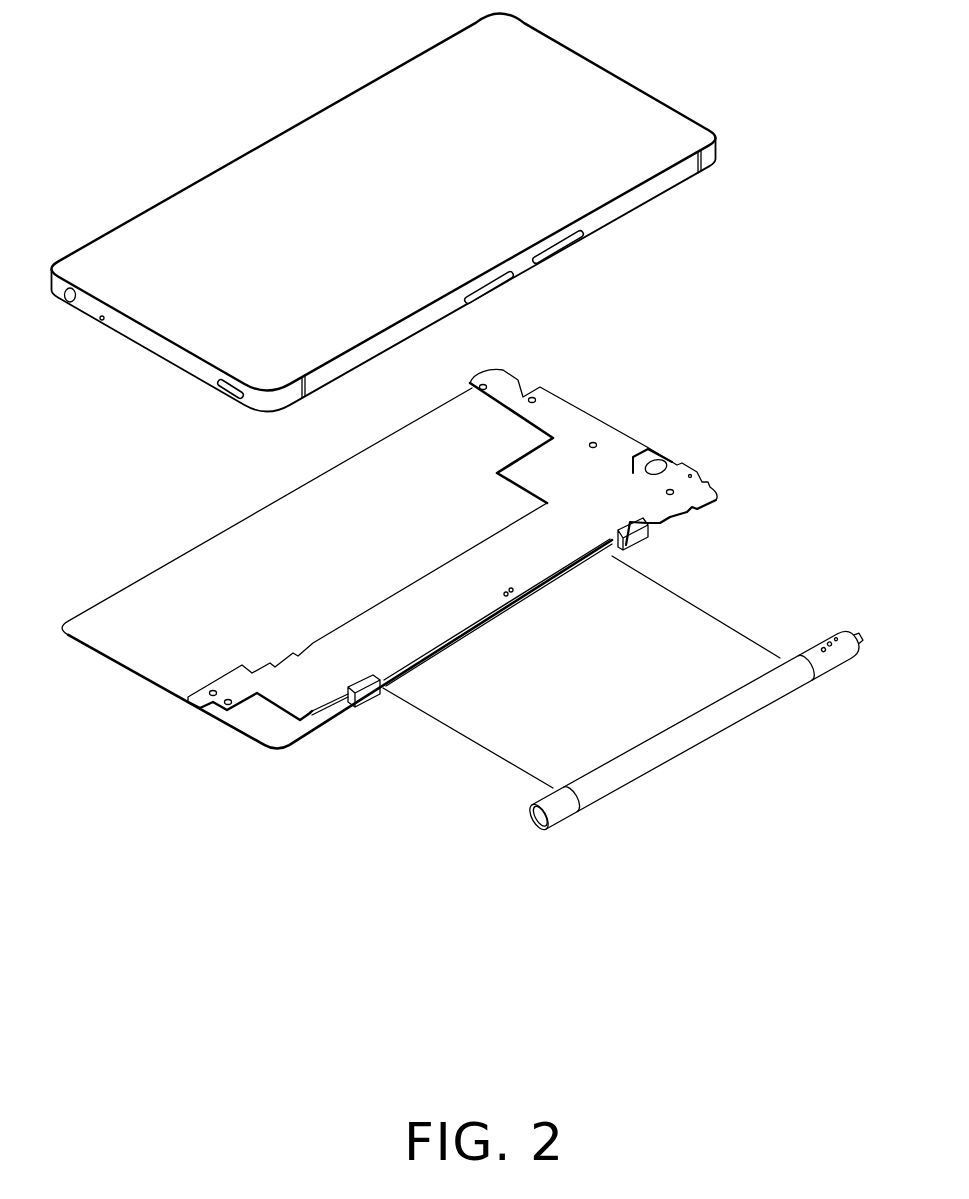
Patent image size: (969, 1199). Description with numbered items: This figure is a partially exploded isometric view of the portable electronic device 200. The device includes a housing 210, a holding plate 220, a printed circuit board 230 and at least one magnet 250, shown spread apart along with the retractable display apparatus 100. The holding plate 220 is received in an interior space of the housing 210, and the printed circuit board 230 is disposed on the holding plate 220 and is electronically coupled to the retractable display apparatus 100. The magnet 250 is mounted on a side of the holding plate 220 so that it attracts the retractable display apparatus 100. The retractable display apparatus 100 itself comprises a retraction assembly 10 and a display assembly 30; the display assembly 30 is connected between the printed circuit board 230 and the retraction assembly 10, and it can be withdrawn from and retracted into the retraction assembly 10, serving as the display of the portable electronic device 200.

The portable electronic device 200 is at (735, 213).
The housing 210 is at (600, 218).
The holding plate 220 is at (483, 420).
The printed circuit board 230 is at (570, 437).
The magnet 250 is at (623, 523).
The retractable display apparatus 100 is at (457, 848).
The display assembly 30 is at (438, 698).
The retraction assembly 10 is at (538, 798).